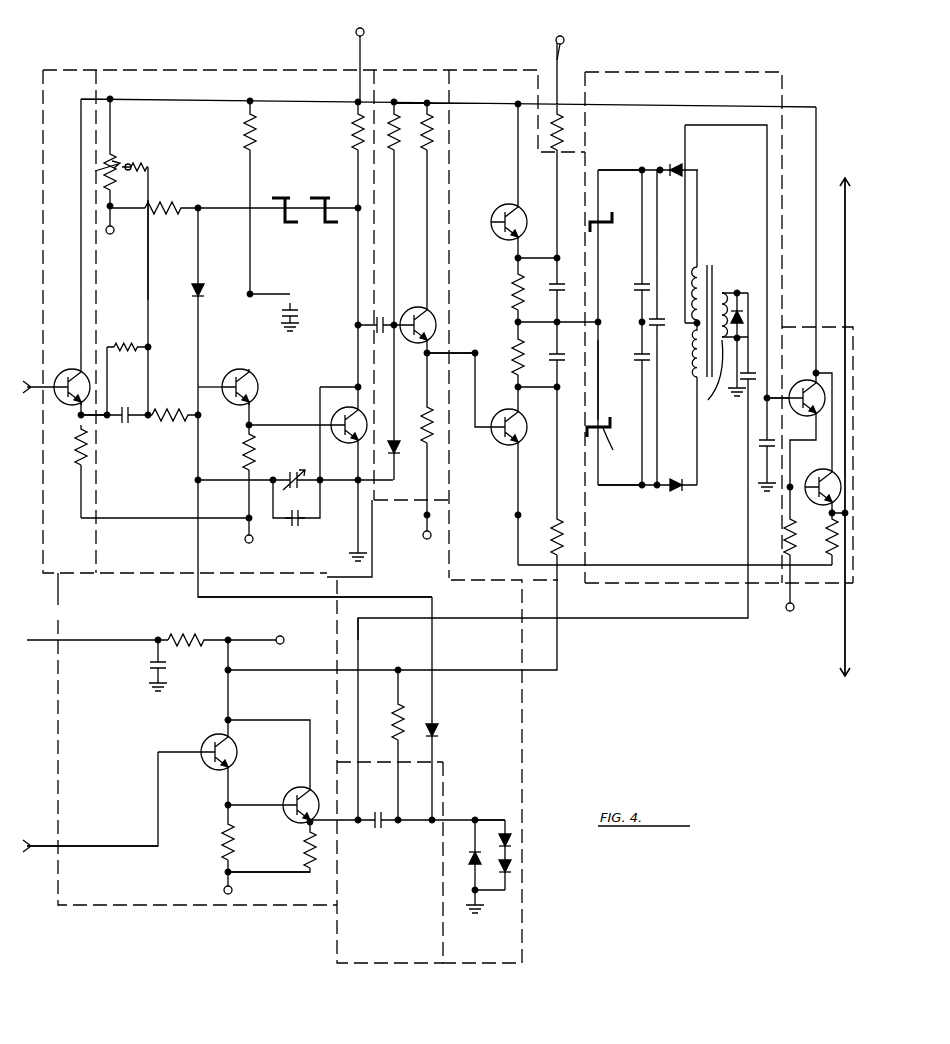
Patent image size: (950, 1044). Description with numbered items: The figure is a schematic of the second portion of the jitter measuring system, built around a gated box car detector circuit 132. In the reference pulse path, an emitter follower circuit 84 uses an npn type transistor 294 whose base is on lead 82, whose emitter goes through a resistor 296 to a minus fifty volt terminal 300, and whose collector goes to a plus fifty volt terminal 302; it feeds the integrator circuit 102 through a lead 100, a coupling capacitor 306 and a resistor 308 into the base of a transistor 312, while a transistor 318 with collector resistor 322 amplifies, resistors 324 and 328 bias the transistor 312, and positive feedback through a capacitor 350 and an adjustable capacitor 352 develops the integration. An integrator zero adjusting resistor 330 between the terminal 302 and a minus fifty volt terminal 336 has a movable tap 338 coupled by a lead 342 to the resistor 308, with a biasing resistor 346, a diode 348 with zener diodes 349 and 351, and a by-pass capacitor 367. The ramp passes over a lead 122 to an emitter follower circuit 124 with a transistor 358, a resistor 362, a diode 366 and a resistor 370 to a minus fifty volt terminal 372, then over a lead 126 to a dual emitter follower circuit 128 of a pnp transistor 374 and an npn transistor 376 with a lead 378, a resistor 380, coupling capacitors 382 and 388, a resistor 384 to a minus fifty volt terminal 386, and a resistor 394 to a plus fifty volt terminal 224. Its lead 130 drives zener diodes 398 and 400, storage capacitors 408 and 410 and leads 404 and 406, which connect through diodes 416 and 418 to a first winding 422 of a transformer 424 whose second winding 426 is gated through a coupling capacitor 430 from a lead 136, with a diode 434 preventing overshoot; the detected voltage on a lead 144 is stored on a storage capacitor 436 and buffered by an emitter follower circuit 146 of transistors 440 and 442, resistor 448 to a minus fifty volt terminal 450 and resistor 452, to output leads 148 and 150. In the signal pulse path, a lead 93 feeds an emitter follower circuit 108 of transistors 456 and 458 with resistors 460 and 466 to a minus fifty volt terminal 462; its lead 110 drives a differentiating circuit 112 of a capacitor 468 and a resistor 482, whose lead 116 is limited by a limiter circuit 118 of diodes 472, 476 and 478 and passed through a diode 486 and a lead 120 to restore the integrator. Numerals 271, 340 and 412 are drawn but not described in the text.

The lead 82 is at (44, 382).
The emitter follower circuit 84 is at (97, 564).
The lead 93 is at (42, 845).
The lead 100 is at (81, 416).
The integrator circuit 102 is at (233, 75).
The emitter follower circuit 108 is at (143, 910).
The lead 110 is at (310, 872).
The differentiating circuit 112 is at (362, 970).
The lead 116 is at (478, 818).
The limiter circuit 118 is at (494, 970).
The lead 120 is at (200, 598).
The lead 122 is at (368, 325).
The emitter follower circuit 124 is at (375, 520).
The lead 126 is at (427, 358).
The dual emitter follower circuit 128 is at (571, 578).
The lead 130 is at (590, 338).
The gated box car detector circuit 132 is at (686, 74).
The lead 136 is at (362, 648).
The lead 144 is at (764, 400).
The emitter follower circuit 146 is at (817, 302).
The lead 148 is at (840, 662).
The lead 150 is at (845, 195).
The +50 volt terminal 224 is at (285, 640).
The resistor 271 is at (184, 650).
The npn type transistor 294 is at (77, 369).
The resistor 296 is at (85, 448).
The −50 volt terminal 300 is at (244, 540).
The +50 volt terminal 302 is at (366, 33).
The coupling capacitor 306 is at (126, 410).
The resistor 308 is at (174, 410).
The npn type transistor 312 is at (258, 387).
The npn type transistor 318 is at (340, 410).
The resistor 322 is at (355, 136).
The resistor 324 is at (246, 452).
The resistor 328 is at (256, 134).
The integrator zero adjusting resistor 330 is at (95, 169).
The −50 volt terminal 336 is at (104, 232).
The movable tap 338 is at (128, 163).
The resistor 340 is at (137, 164).
The lead 342 is at (150, 280).
The biasing resistor 346 is at (128, 345).
The diode 348 is at (202, 292).
The zener diode 349 is at (288, 198).
The resistor; capacitor 350 is at (170, 205).
The zener diode 351 is at (338, 188).
The adjustable capacitor 352 is at (292, 474).
The npn type transistor 358 is at (400, 333).
The resistor 362 is at (432, 136).
The diode 366 is at (398, 448).
The by-pass capacitor; biasing resistor 367 is at (395, 110).
The resistor 370 is at (430, 422).
The −50 volt terminal 372 is at (427, 540).
The pnp type transistor 374 is at (512, 444).
The npn type transistor; resistor 376 is at (504, 206).
The lead 378 is at (516, 316).
The resistor 380 is at (516, 352).
The coupling capacitor 382 is at (566, 288).
The resistor 384 is at (562, 140).
The −50 volt terminal 386 is at (566, 40).
The coupling capacitor 388 is at (556, 360).
The resistor 394 is at (562, 536).
The first zener diode 398 is at (603, 452).
The second zener diode 400 is at (610, 212).
The lead 404 is at (634, 490).
The lead 406 is at (620, 170).
The storage capacitor 408 is at (638, 360).
The storage capacitor 410 is at (638, 287).
The capacitor 412 is at (650, 322).
The diode 416 is at (676, 166).
The diode 418 is at (676, 492).
The first winding 422 is at (699, 268).
The transformer 424 is at (722, 289).
The second winding 426 is at (716, 398).
The coupling capacitor 430 is at (754, 376).
The diode 434 is at (742, 316).
The storage capacitor 436 is at (758, 446).
The npn type transistor 440 is at (796, 408).
The npn type transistor 442 is at (814, 474).
The resistor 448 is at (789, 534).
The −50 volt terminal 450 is at (786, 610).
The resistor 452 is at (830, 550).
The npn type transistor 456 is at (247, 750).
The npn type transistor 458 is at (284, 801).
The resistor 460 is at (226, 825).
The −50 volt terminal 462 is at (224, 889).
The resistor 466 is at (305, 850).
The capacitor 468 is at (376, 830).
The diode 472 is at (470, 858).
The diode 476 is at (508, 838).
The diode 478 is at (508, 862).
The resistor 482 is at (402, 708).
The diode 486 is at (437, 729).